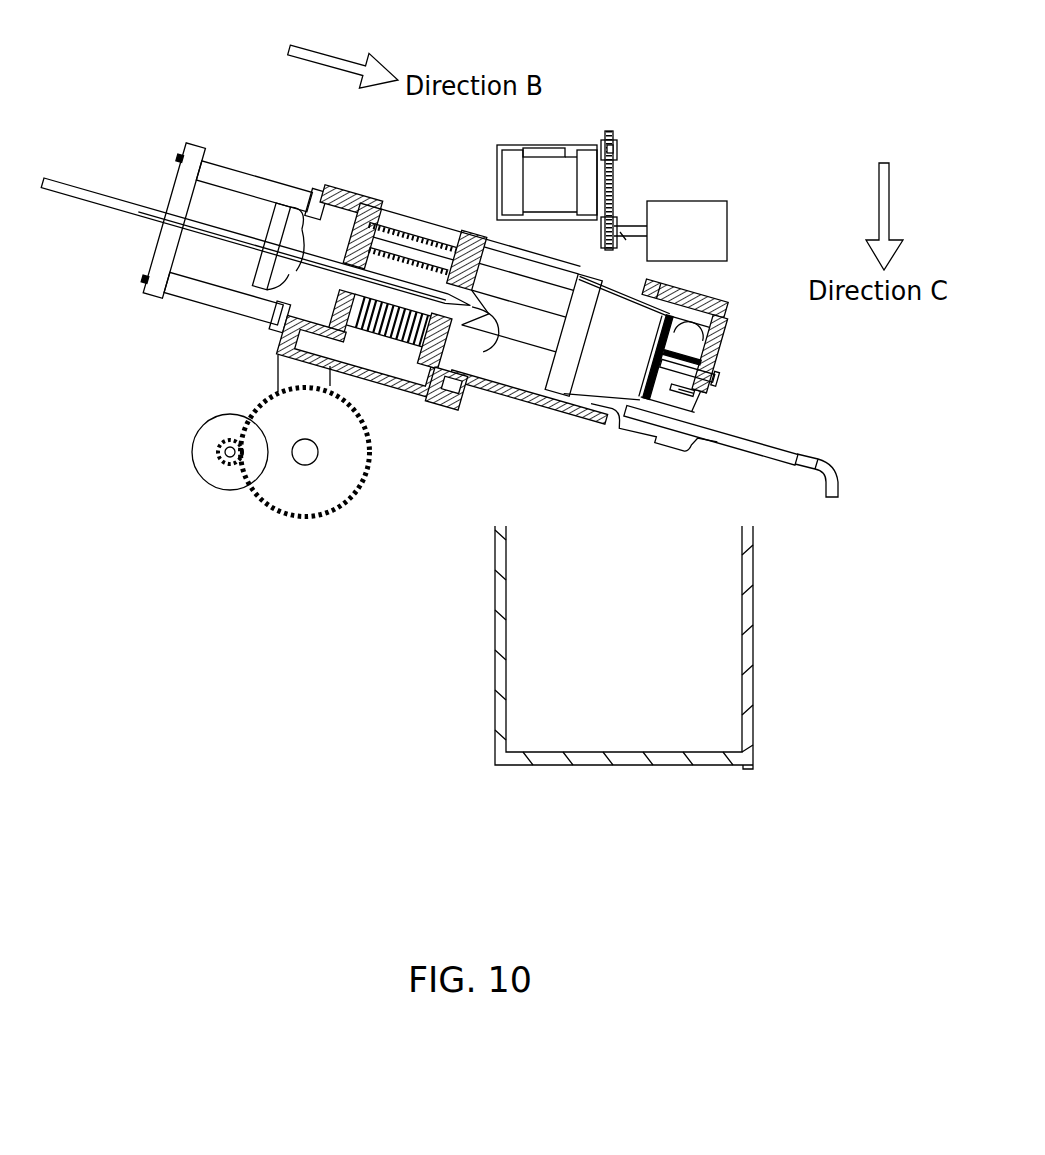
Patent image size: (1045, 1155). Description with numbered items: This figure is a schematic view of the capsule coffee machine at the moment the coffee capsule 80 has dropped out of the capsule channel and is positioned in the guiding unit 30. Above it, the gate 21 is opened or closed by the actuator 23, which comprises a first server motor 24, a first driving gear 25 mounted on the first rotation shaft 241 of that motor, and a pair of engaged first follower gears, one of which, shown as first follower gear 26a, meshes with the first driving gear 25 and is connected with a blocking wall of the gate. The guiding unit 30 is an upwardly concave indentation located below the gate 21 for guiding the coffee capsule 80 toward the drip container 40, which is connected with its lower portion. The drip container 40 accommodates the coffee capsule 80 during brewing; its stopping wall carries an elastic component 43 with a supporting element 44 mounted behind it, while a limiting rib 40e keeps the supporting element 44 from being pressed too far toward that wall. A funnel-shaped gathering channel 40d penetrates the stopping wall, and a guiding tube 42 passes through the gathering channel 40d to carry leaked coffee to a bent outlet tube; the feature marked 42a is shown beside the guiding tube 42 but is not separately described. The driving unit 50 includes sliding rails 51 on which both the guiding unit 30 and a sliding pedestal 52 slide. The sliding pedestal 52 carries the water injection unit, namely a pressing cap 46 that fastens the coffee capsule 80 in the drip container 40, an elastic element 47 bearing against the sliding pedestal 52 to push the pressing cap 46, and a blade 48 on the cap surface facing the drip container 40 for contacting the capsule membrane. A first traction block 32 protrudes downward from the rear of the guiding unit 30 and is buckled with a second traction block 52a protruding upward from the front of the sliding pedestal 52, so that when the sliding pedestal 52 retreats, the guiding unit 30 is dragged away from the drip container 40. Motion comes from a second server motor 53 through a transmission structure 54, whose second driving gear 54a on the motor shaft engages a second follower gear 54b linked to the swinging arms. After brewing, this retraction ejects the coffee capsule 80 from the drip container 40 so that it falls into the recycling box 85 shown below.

The gate 21 is at (497, 155).
The actuator 23 is at (626, 177).
The first server motor 24 is at (727, 233).
The first rotation shaft 241 is at (624, 236).
The first driving gear 25 is at (618, 217).
The rack 26a is at (609, 131).
The guiding unit 30 is at (563, 410).
The first traction block 32 is at (442, 405).
The drip container 40 is at (722, 361).
The gathering channel 40d is at (690, 411).
The limiting rib 40e is at (697, 372).
The guiding tube 42 is at (725, 430).
The bracket portion 42a is at (612, 432).
The elastic component 43 is at (702, 356).
The supporting element 44 is at (708, 312).
The pressing cap 46 is at (466, 226).
The elastic element 47 is at (393, 230).
The blade 48 is at (473, 307).
The driving unit 50 is at (143, 366).
The sliding rails 51 is at (216, 162).
The sliding pedestal 52 is at (278, 354).
The second traction block 52a is at (482, 391).
The second server motor 53 is at (203, 422).
The transmission structure 54 is at (243, 501).
The second driving gear 54a is at (214, 455).
The second follower gear 54b is at (303, 501).
The coffee capsule 80 is at (581, 273).
The recycling box 85 is at (492, 630).